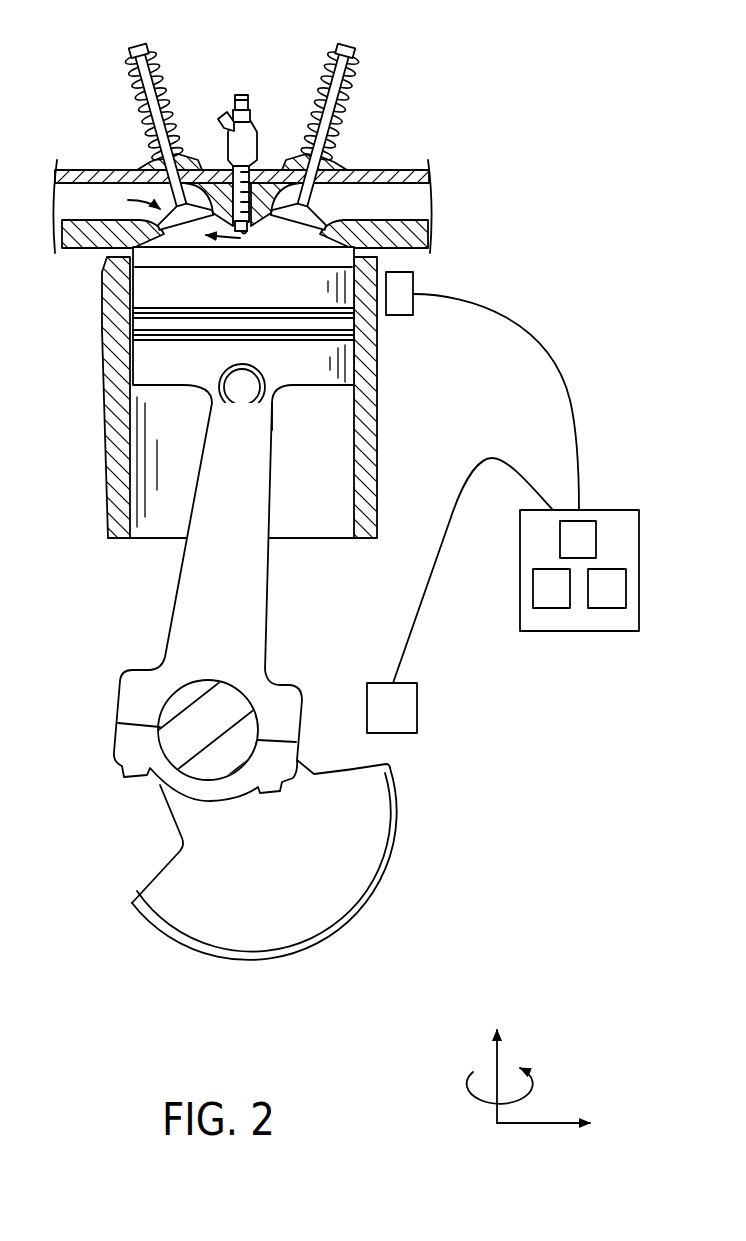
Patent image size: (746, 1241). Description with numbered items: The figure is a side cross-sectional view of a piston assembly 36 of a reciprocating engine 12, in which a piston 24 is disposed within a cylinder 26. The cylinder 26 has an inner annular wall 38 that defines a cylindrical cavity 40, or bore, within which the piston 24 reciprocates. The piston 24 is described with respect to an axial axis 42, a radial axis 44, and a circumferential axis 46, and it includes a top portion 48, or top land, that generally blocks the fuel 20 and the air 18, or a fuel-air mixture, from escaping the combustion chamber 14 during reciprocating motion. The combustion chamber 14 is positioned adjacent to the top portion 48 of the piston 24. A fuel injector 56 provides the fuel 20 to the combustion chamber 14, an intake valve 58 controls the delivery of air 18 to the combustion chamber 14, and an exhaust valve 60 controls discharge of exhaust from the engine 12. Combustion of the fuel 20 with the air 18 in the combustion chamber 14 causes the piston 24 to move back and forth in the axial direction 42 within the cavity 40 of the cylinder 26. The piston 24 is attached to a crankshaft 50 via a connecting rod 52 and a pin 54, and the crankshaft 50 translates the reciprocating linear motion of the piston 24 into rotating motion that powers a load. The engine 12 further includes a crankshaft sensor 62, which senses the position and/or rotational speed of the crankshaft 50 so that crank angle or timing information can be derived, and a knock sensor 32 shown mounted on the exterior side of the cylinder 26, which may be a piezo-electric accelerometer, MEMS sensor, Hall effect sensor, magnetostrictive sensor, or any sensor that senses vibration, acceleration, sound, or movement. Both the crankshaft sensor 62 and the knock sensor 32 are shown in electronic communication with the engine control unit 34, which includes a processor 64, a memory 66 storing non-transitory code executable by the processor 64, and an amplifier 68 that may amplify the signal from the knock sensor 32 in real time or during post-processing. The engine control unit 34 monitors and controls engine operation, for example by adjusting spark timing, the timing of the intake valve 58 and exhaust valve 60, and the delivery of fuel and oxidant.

The reciprocating engine 12 is at (473, 70).
The combustion chamber 14 is at (285, 233).
The air 18 is at (147, 197).
The fuel 20 is at (243, 86).
The piston 24 is at (242, 388).
The cylinder 26 is at (110, 420).
The knock sensor 32 is at (417, 281).
The engine control unit 34 is at (611, 590).
The piston assembly 36 is at (289, 504).
The inner annular wall 38 is at (138, 457).
The cylindrical cavity 40 is at (180, 529).
The axial axis 42 is at (497, 1057).
The radial axis 44 is at (542, 1125).
The circumferential axis 46 is at (527, 1095).
The top portion 48 is at (303, 295).
The crankshaft 50 is at (178, 885).
The connecting rod 52 is at (247, 645).
The pin 54 is at (248, 393).
The fuel injector 56 is at (227, 118).
The intake valve 58 is at (137, 44).
The exhaust valve 60 is at (351, 47).
The crankshaft sensor 62 is at (417, 708).
The processor 64 is at (553, 608).
The memory 66 is at (611, 608).
The amplifier 68 is at (596, 538).